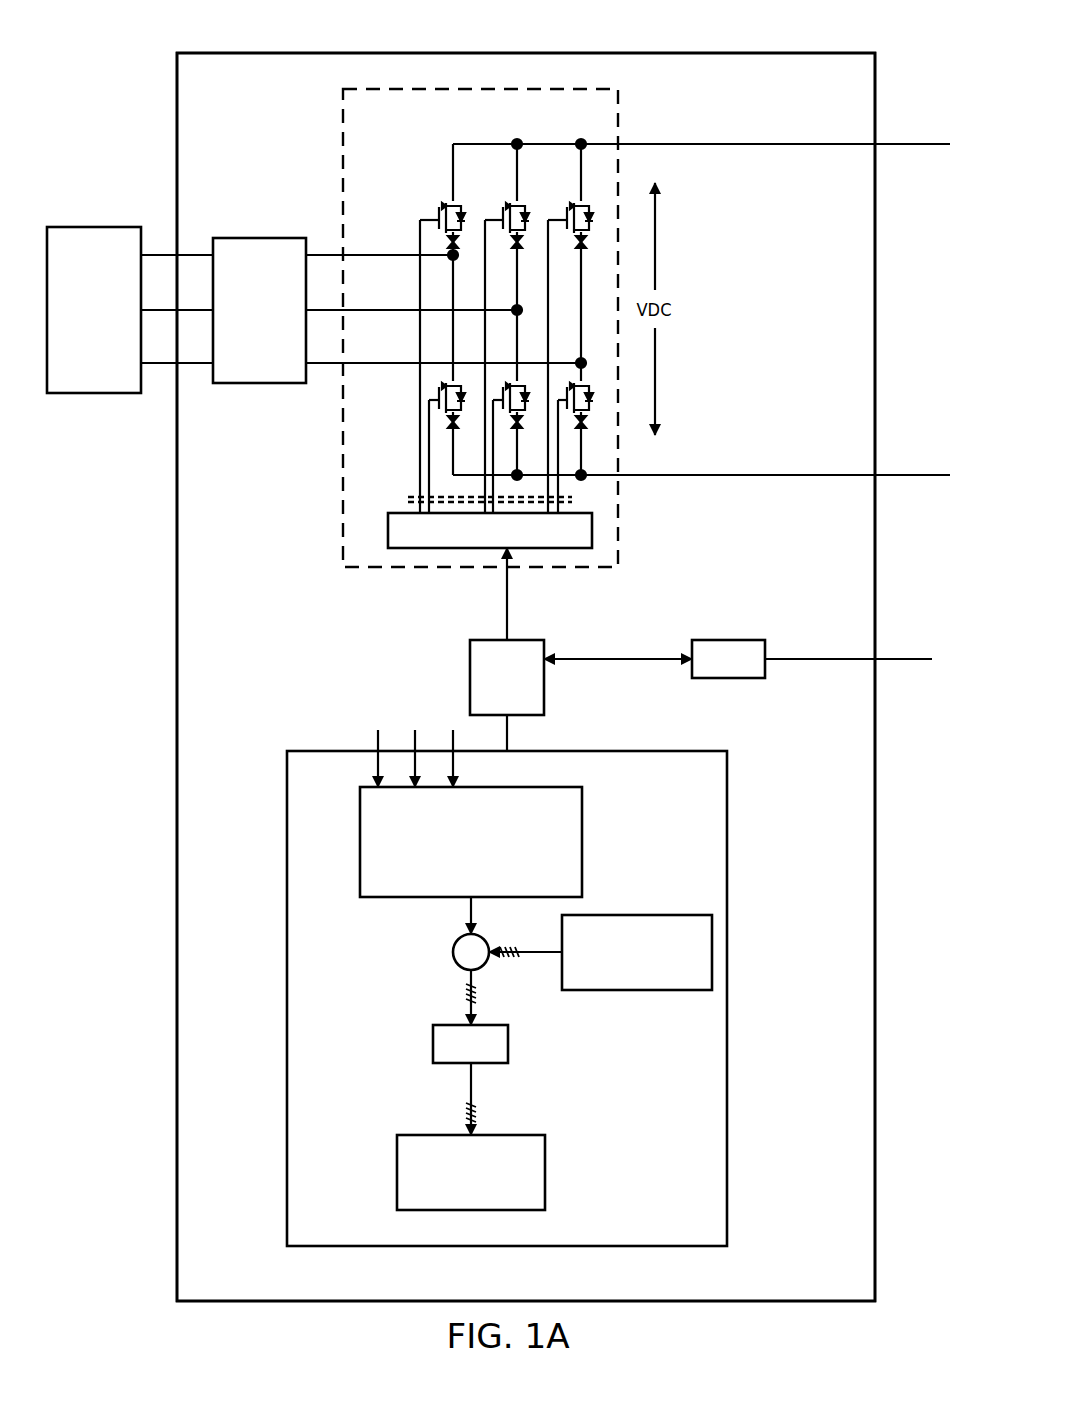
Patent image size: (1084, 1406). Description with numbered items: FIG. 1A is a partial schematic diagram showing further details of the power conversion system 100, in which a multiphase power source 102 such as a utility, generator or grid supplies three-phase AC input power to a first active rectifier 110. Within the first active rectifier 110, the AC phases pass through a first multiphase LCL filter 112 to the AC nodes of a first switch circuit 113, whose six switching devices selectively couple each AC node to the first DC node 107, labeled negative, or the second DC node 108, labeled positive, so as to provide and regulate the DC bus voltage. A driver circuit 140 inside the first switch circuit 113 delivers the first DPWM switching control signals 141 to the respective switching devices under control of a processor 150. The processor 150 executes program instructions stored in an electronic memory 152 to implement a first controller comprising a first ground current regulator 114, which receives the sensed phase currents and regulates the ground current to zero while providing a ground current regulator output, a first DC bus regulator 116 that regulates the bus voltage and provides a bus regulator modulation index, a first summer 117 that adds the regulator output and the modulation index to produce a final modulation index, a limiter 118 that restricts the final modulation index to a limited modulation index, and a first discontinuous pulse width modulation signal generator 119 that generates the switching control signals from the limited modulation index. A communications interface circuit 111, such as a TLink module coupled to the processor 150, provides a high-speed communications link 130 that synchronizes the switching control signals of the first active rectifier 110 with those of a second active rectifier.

The power conversion system 100 is at (172, 33).
The multiphase power source 102 is at (95, 227).
The first DC node 107 is at (912, 475).
The second DC node 108 is at (912, 145).
The first active rectifier 110 is at (810, 53).
The communications interface circuit 111 is at (725, 640).
The first multiphase LCL filter 112 is at (258, 238).
The first switch circuit 113 is at (488, 89).
The first ground current regulator 114 is at (522, 787).
The first DC bus regulator 116 is at (655, 915).
The first summer 117 is at (455, 943).
The limiter 118 is at (477, 1025).
The first discontinuous pulse width modulation (DPWM) signal generator 119 is at (490, 1135).
The high-speed communications link 130 is at (893, 659).
The driver circuit 140 is at (400, 512).
The first DPWM switching control signals 141 is at (412, 496).
The processor 150 is at (490, 640).
The electronic memory 152 is at (325, 750).